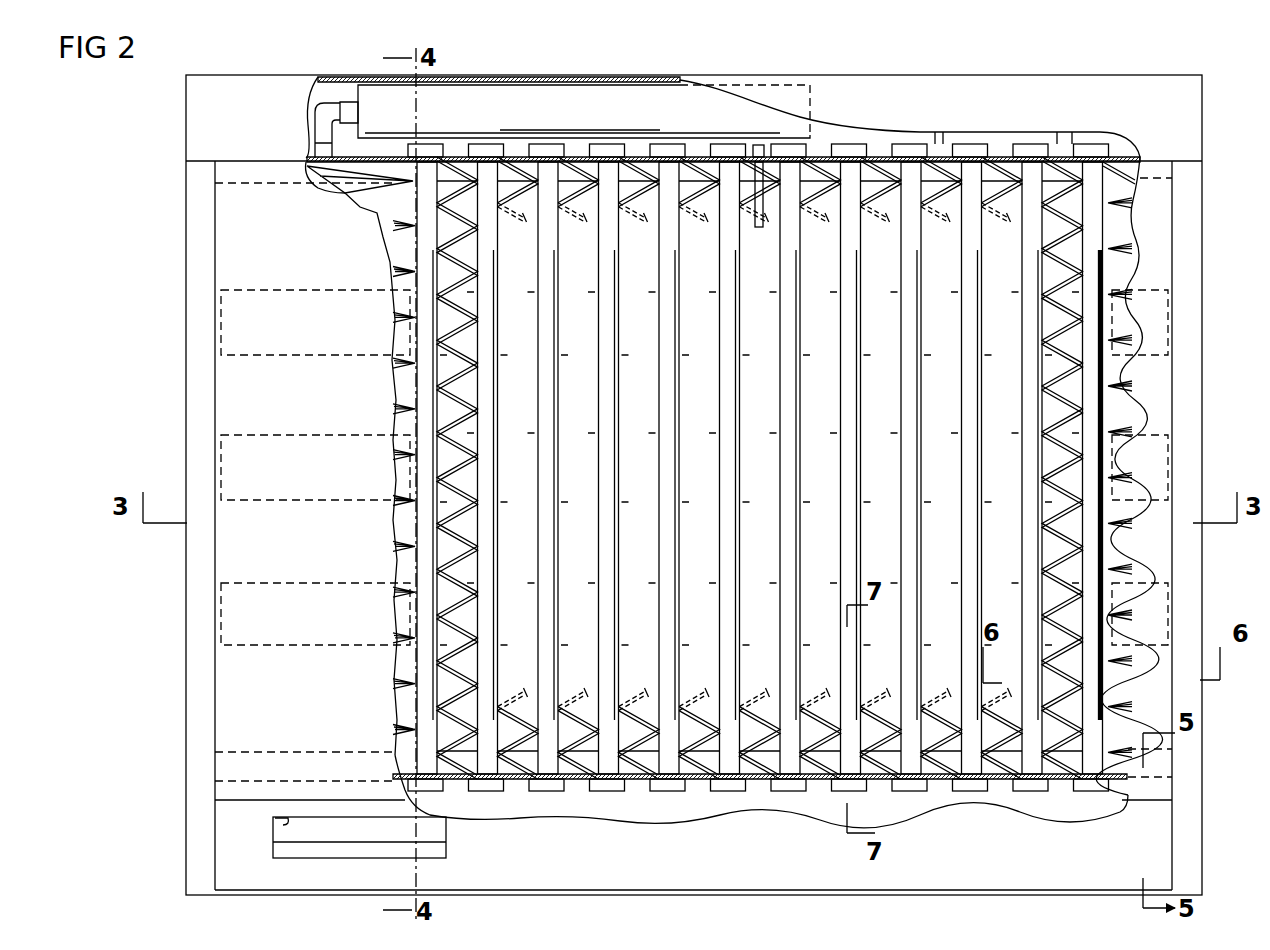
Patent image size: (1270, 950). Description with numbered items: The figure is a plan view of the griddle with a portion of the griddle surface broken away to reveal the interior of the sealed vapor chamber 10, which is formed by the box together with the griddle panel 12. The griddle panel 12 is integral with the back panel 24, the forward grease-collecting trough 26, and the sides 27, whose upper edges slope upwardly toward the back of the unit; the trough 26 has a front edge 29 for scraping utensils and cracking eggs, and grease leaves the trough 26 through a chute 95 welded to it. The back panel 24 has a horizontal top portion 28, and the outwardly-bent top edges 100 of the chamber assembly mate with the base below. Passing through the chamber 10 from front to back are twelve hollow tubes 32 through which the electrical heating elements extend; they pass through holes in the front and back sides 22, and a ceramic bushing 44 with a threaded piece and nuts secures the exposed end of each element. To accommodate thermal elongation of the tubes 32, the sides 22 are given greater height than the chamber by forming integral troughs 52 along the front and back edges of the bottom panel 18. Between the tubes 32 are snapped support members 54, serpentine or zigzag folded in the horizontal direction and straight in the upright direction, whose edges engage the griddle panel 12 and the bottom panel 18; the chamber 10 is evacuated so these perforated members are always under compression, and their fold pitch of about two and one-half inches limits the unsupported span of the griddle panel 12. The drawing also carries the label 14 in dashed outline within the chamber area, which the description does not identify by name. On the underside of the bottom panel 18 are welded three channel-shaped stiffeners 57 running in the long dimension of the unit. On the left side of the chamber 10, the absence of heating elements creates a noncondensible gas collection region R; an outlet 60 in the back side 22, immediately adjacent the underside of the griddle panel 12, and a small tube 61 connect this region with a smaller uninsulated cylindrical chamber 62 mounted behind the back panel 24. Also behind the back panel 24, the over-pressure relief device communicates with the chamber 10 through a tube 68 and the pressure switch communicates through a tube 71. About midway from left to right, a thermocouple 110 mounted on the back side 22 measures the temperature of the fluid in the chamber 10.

The sealed vapor chamber 10 is at (1118, 375).
The griddle panel 12 is at (240, 238).
The workpiece 14 is at (282, 432).
The bottom panel 18 is at (400, 251).
The front and back sides 22 is at (1064, 779).
The back panel 24 is at (1135, 186).
The forward grease-collecting trough 26 is at (1155, 844).
The sides 27 is at (214, 700).
The horizontal top portion 28 is at (880, 76).
The front edge 29 is at (1035, 893).
The hollow tubes 32 is at (724, 450).
The ceramic bushing 44 is at (1108, 146).
The integral troughs 52 is at (320, 182).
The support members 54 is at (400, 682).
The channel-shaped stiffeners 57 is at (392, 292).
The outlet 60 is at (360, 191).
The tube 61 is at (315, 126).
The cylindrical chamber 62 is at (588, 85).
The tube 68 is at (950, 138).
The tube 71 is at (1065, 137).
The chute 95 is at (275, 826).
The outwardly-bent top edges 100 is at (190, 435).
The thermocouple 110 is at (757, 212).
The noncondensible gas collection region R is at (352, 539).